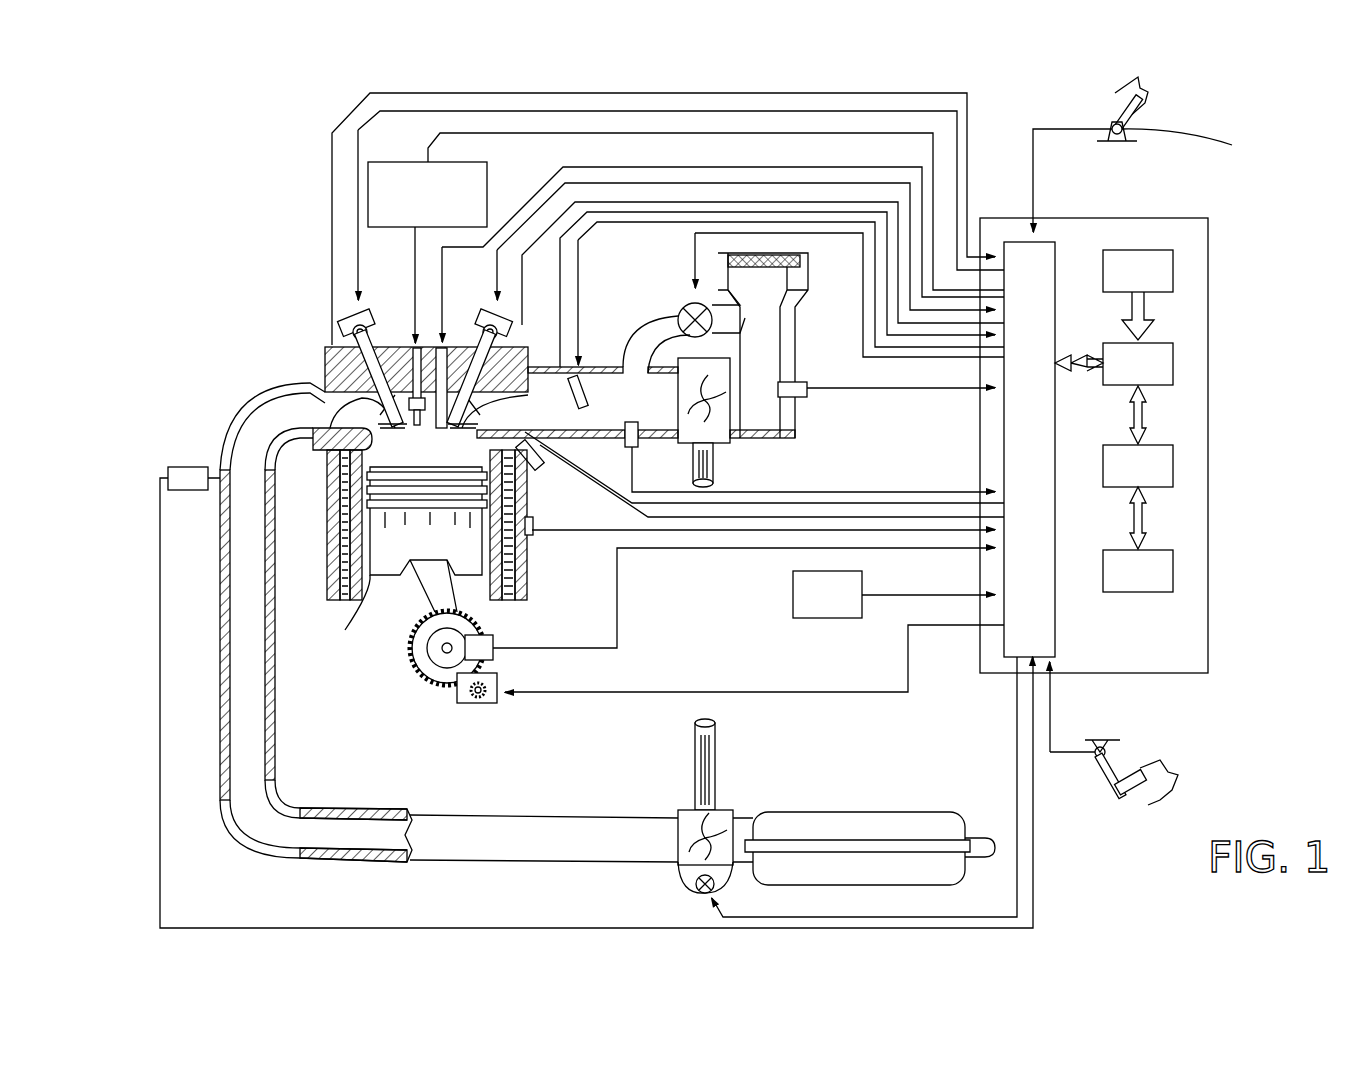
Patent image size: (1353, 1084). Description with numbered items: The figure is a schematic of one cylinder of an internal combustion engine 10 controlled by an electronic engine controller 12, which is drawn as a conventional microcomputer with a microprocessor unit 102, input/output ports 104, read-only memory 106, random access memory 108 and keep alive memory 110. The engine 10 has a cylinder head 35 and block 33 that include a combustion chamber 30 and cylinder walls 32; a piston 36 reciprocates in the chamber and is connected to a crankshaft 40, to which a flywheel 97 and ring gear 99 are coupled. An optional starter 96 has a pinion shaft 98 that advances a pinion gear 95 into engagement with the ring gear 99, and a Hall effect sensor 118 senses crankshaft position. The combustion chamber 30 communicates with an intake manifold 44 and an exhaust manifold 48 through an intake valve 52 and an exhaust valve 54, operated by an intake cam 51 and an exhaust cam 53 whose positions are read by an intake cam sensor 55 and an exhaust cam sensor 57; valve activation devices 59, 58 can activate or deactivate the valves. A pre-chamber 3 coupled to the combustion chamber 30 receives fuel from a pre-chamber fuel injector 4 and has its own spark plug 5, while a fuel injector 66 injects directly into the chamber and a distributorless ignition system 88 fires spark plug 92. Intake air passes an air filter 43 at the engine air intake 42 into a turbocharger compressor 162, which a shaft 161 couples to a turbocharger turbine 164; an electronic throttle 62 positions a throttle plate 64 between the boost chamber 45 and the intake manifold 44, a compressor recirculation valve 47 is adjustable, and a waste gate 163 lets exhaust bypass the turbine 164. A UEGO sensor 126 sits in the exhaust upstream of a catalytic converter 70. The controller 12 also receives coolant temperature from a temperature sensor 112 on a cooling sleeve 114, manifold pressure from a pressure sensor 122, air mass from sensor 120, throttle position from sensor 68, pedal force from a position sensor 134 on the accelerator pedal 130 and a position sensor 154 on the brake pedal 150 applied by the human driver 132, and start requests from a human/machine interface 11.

The internal combustion engine 10 is at (252, 300).
The electronic engine controller 12 is at (1207, 222).
The input/output ports 104 is at (1055, 250).
The read-only memory 106 is at (1173, 268).
The microprocessor unit 102 is at (1173, 362).
The random access memory 108 is at (1173, 462).
The keep alive memory 110 is at (1173, 566).
The distributorless ignition system 88 is at (380, 162).
The spark plug 92 is at (414, 352).
The fuel injector 66 is at (462, 337).
The exhaust cam 53 is at (362, 317).
The intake cam 51 is at (491, 318).
The exhaust cam sensor 57 is at (350, 325).
The valve activation device 59 is at (488, 322).
The valve activation device 58 is at (372, 322).
The intake cam sensor 55 is at (508, 332).
The cylinder head 35 is at (320, 345).
The exhaust valve 54 is at (320, 385).
The exhaust manifold 48 is at (318, 588).
The intake valve 52 is at (470, 404).
The intake manifold 44 is at (603, 392).
The boost chamber 45 is at (636, 415).
The throttle position sensor 68 is at (552, 372).
The electronic throttle 62 is at (586, 402).
The throttle plate 64 is at (578, 405).
The engine air intake 42 is at (634, 270).
The compressor recirculation valve 47 is at (683, 295).
The air filter 43 is at (780, 272).
The air mass sensor 120 is at (800, 382).
The turbocharger compressor 162 is at (718, 428).
The shaft 161 is at (690, 468).
The turbocharger turbine 164 is at (688, 810).
The pressure sensor 122 is at (627, 447).
The pre-chamber 3 is at (485, 440).
The spark plug 5 is at (540, 436).
The pre-chamber fuel injector 4 is at (528, 458).
The block 33 is at (320, 487).
The combustion chamber 30 is at (365, 485).
The cooling sleeve 114 is at (512, 562).
The temperature sensor 112 is at (532, 530).
The piston 36 is at (410, 550).
The cylinder walls 32 is at (365, 580).
The crankshaft 40 is at (420, 672).
The flywheel 97 is at (410, 650).
The ring gear 99 is at (430, 688).
The pinion shaft 98 is at (472, 700).
The pinion gear 95 is at (483, 698).
The starter 96 is at (490, 703).
The Hall effect sensor 118 is at (493, 637).
The human/machine interface 11 is at (894, 594).
The UEGO sensor 126 is at (168, 470).
The catalytic converter 70 is at (790, 812).
The waste gate 163 is at (697, 893).
The accelerator pedal 130 is at (1100, 110).
The human driver 132 is at (1160, 762).
The position sensor 134 is at (1197, 146).
The brake pedal 150 is at (1120, 800).
The position sensor 154 is at (1090, 748).